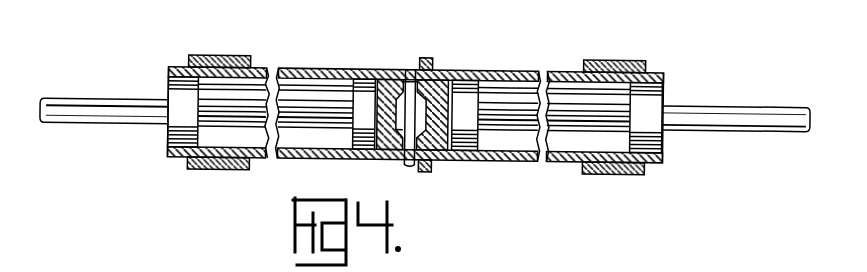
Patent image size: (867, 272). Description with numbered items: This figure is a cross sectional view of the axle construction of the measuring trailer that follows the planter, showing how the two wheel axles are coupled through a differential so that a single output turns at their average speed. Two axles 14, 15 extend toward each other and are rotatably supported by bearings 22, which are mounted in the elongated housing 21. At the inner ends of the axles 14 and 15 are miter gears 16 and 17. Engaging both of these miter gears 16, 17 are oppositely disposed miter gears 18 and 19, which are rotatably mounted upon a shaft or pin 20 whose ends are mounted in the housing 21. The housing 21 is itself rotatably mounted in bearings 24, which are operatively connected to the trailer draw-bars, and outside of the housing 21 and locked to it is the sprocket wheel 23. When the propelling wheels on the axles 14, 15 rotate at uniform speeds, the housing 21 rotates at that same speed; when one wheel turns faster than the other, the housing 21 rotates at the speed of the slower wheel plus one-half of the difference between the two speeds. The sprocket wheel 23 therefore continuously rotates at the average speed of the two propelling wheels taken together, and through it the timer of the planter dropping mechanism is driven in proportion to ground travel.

The axle 14 is at (737, 127).
The axle 15 is at (113, 122).
The miter gear 16 is at (440, 101).
The miter gear 17 is at (385, 96).
The miter gear 18 is at (408, 92).
The miter gear 19 is at (398, 129).
The shaft or pin 20 is at (412, 166).
The elongated housing 21 is at (520, 73).
The bearings 22 is at (171, 134).
The sprocket wheel 23 is at (430, 57).
The bearings 24 is at (212, 58).